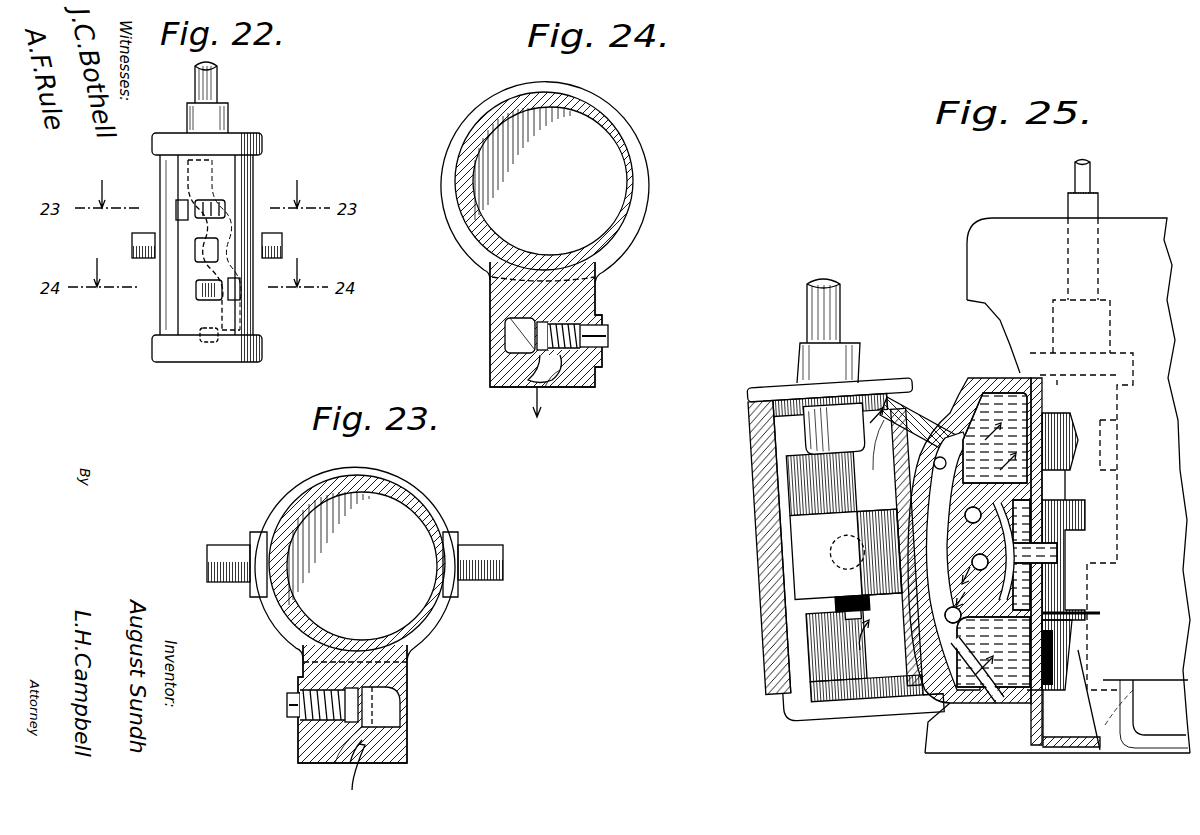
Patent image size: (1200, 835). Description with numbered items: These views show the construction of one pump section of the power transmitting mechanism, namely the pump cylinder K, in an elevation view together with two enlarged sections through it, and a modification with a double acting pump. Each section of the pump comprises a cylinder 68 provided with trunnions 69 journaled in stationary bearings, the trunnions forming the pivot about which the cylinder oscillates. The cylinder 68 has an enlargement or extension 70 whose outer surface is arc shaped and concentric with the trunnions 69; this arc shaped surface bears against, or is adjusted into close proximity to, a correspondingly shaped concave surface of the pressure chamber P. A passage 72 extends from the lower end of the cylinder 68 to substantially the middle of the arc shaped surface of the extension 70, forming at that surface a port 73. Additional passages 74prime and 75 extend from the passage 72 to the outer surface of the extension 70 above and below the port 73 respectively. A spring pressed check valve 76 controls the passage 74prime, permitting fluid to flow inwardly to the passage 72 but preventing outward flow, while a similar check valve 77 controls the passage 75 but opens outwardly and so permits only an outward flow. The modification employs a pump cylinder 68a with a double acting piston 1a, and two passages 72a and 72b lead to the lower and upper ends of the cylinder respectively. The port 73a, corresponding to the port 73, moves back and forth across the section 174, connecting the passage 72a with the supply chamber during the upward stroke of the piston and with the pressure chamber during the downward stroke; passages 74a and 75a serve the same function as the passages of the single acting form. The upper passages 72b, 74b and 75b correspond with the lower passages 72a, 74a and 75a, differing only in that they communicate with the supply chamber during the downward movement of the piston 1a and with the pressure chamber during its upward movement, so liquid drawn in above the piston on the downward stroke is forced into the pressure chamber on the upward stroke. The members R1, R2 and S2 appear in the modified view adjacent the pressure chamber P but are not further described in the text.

In FIG. 22, the cylinder 68 is at (170, 180).
In FIG. 23, the cylinder 68 is at (305, 500).
In FIG. 22, the trunnions 69 is at (130, 240).
In FIG. 23, the trunnions 69 is at (222, 585).
In FIG. 22, the enlargement or extension 70 is at (233, 180).
In FIG. 24, the enlargement or extension 70 is at (588, 298).
In FIG. 23, the enlargement or extension 70 is at (410, 678).
In FIG. 22, the passage 72 is at (200, 312).
In FIG. 22, the port 73 is at (205, 248).
In FIG. 22, the passage 74prime is at (226, 200).
In FIG. 23, the passage 74prime is at (385, 725).
In FIG. 22, the passage 75 is at (210, 300).
In FIG. 24, the passage 75 is at (553, 380).
In FIG. 23, the spring pressed check valve 76 is at (395, 700).
In FIG. 24, the check valve 77 is at (545, 332).
In FIG. 22, the pump cylinder K is at (255, 165).
In FIG. 24, the pump cylinder K is at (625, 135).
In FIG. 23, the pump cylinder K is at (440, 510).
In FIG. 25, the double acting piston 1a is at (805, 572).
In FIG. 25, the pump cylinder 68a is at (775, 645).
In FIG. 25, the pressure chamber P is at (968, 392).
In FIG. 25, the rail member R' R1 is at (1080, 445).
In FIG. 25, the housing frame R² R2 is at (1030, 698).
In FIG. 25, the slide S² S2 is at (1020, 507).
In FIG. 25, the port 73a is at (1030, 590).
In FIG. 25, the section 174 is at (1045, 615).
In FIG. 25, the passage 72a is at (900, 640).
In FIG. 25, the passage 72b is at (883, 448).
In FIG. 25, the passage 74a is at (971, 562).
In FIG. 25, the passage 74b is at (995, 525).
In FIG. 25, the passage 75a is at (946, 608).
In FIG. 25, the passage 75b is at (964, 512).